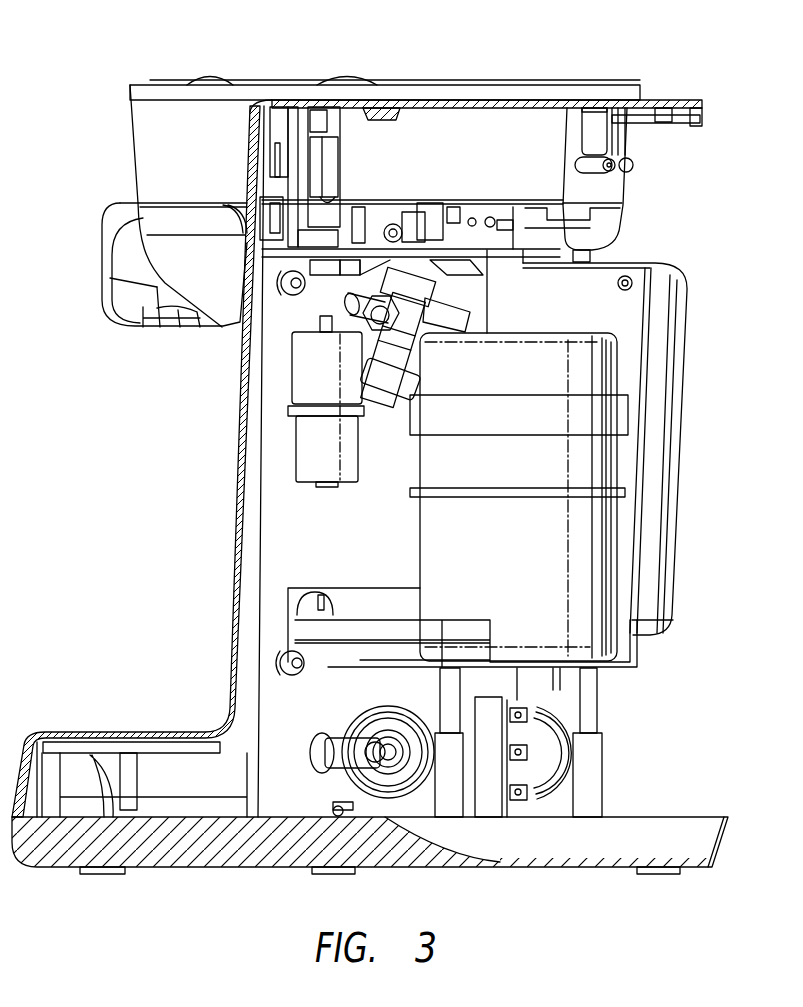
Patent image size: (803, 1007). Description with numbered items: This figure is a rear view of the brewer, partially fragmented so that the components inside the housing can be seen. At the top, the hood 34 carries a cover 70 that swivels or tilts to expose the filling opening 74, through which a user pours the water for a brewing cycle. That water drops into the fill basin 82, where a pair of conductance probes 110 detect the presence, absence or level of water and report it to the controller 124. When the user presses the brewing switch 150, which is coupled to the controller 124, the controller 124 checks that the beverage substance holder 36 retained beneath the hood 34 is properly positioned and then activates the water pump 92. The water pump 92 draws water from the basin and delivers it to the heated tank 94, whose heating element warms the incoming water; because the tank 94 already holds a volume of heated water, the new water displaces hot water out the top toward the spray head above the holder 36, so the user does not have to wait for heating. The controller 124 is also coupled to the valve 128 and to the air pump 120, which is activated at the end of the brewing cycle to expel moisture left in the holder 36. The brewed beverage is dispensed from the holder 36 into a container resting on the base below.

The filling opening 74 is at (103, 104).
The cover 70 is at (180, 83).
The fill basin 82 is at (425, 140).
The conductance probes 110 is at (472, 218).
The hood 34 is at (147, 163).
The beverage substance holder 36 is at (176, 255).
The valve 128 is at (385, 285).
The air pump 120 is at (305, 448).
The controller 124 is at (666, 374).
The heated tank 94 is at (600, 462).
The brewing switch 150 is at (238, 608).
The water pump 92 is at (390, 790).